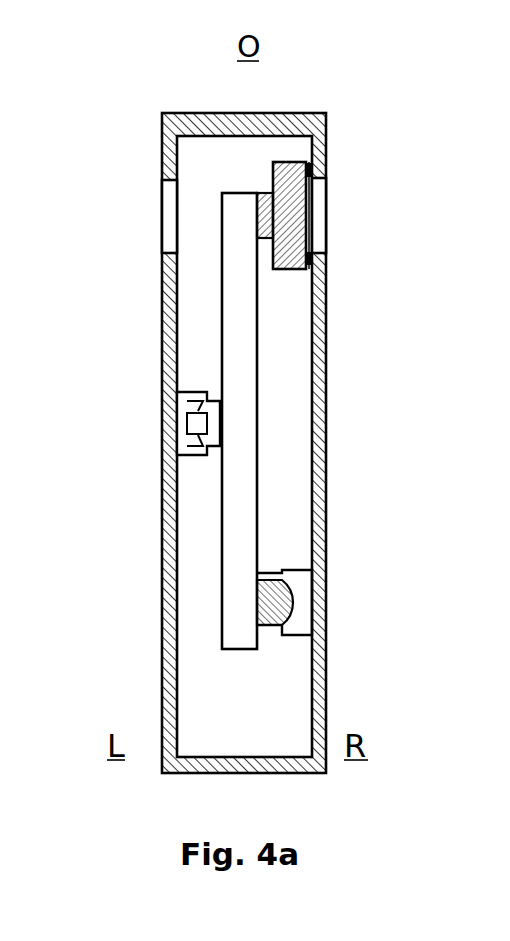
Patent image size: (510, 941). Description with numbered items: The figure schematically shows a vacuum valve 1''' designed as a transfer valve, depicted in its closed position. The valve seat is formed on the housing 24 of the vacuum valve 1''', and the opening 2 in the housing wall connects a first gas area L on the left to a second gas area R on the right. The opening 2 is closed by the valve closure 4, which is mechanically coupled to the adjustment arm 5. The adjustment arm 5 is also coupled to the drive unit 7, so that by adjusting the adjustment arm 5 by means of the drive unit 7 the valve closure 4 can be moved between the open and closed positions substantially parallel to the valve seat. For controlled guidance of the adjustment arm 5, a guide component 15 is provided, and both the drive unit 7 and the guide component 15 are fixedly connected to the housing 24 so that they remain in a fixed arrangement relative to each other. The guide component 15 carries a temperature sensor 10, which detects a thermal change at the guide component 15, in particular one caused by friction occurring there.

The vacuum valve 1''' is at (100, 81).
The opening 2 is at (233, 226).
The valve closure 4 is at (341, 215).
The adjustment arm 5 is at (300, 421).
The drive unit 7 is at (324, 602).
The temperature sensor 10 is at (143, 446).
The guide component 15 is at (150, 426).
The housing 24 is at (288, 443).